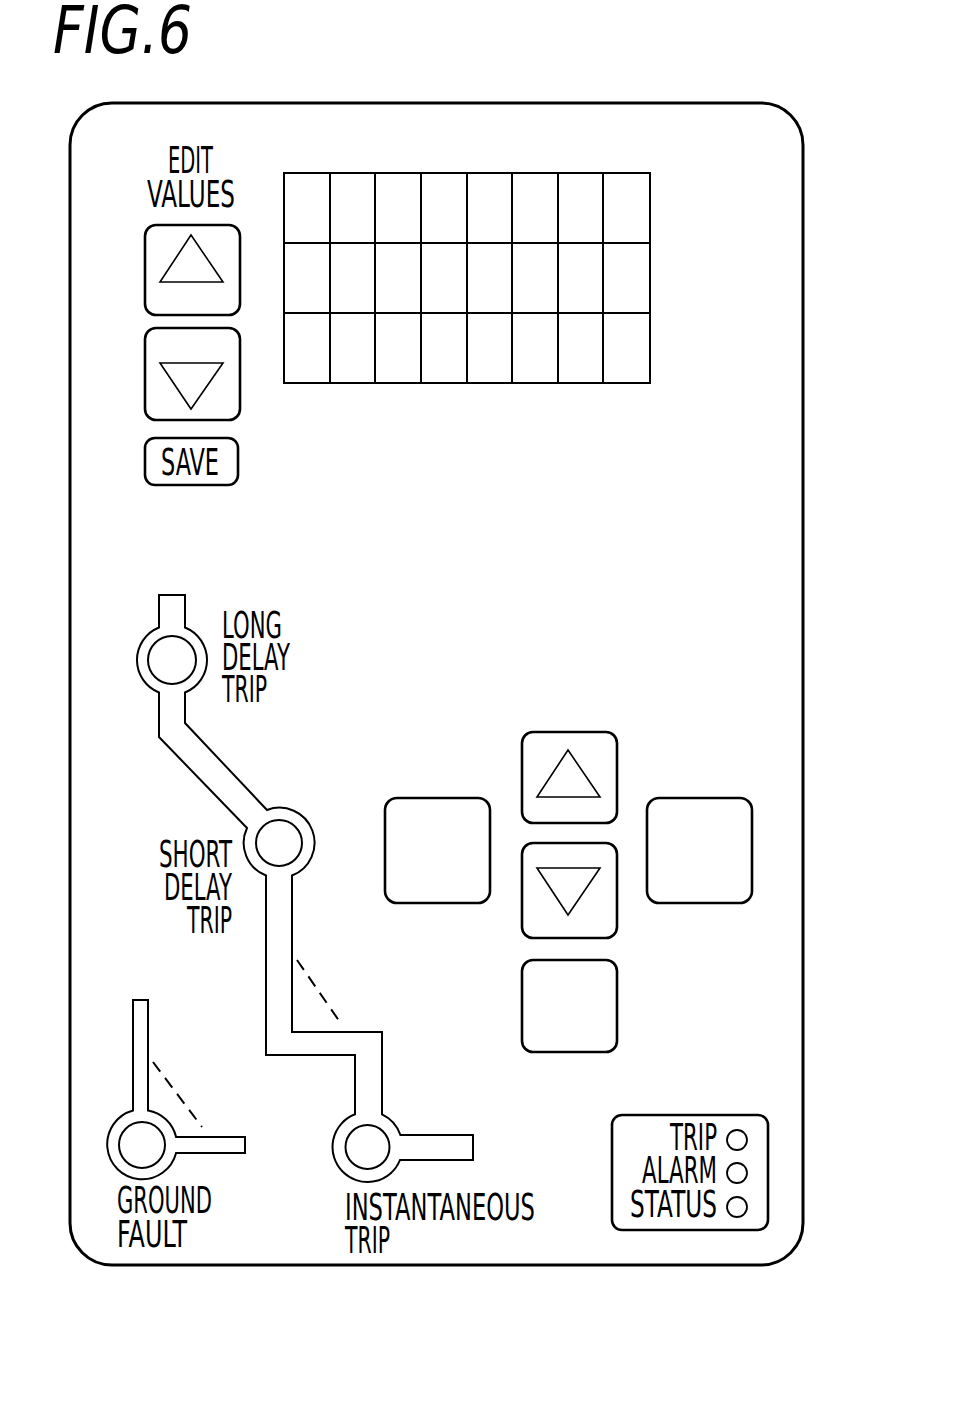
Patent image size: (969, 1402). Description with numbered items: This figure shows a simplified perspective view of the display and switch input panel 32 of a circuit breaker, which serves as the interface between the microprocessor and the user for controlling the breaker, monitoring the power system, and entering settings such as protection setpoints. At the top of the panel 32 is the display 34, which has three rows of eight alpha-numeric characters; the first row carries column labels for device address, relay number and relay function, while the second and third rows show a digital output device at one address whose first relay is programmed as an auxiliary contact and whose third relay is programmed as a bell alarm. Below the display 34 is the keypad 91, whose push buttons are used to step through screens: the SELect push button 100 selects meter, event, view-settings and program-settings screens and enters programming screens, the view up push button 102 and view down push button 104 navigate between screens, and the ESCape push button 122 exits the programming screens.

The display and switch input panel 32 is at (432, 1328).
The display 34 is at (596, 256).
The keypad 91 is at (754, 979).
The SELect push button 100 is at (726, 797).
The view up push button 102 is at (589, 730).
The view down push button 104 is at (524, 935).
The ESCape push button 122 is at (449, 797).